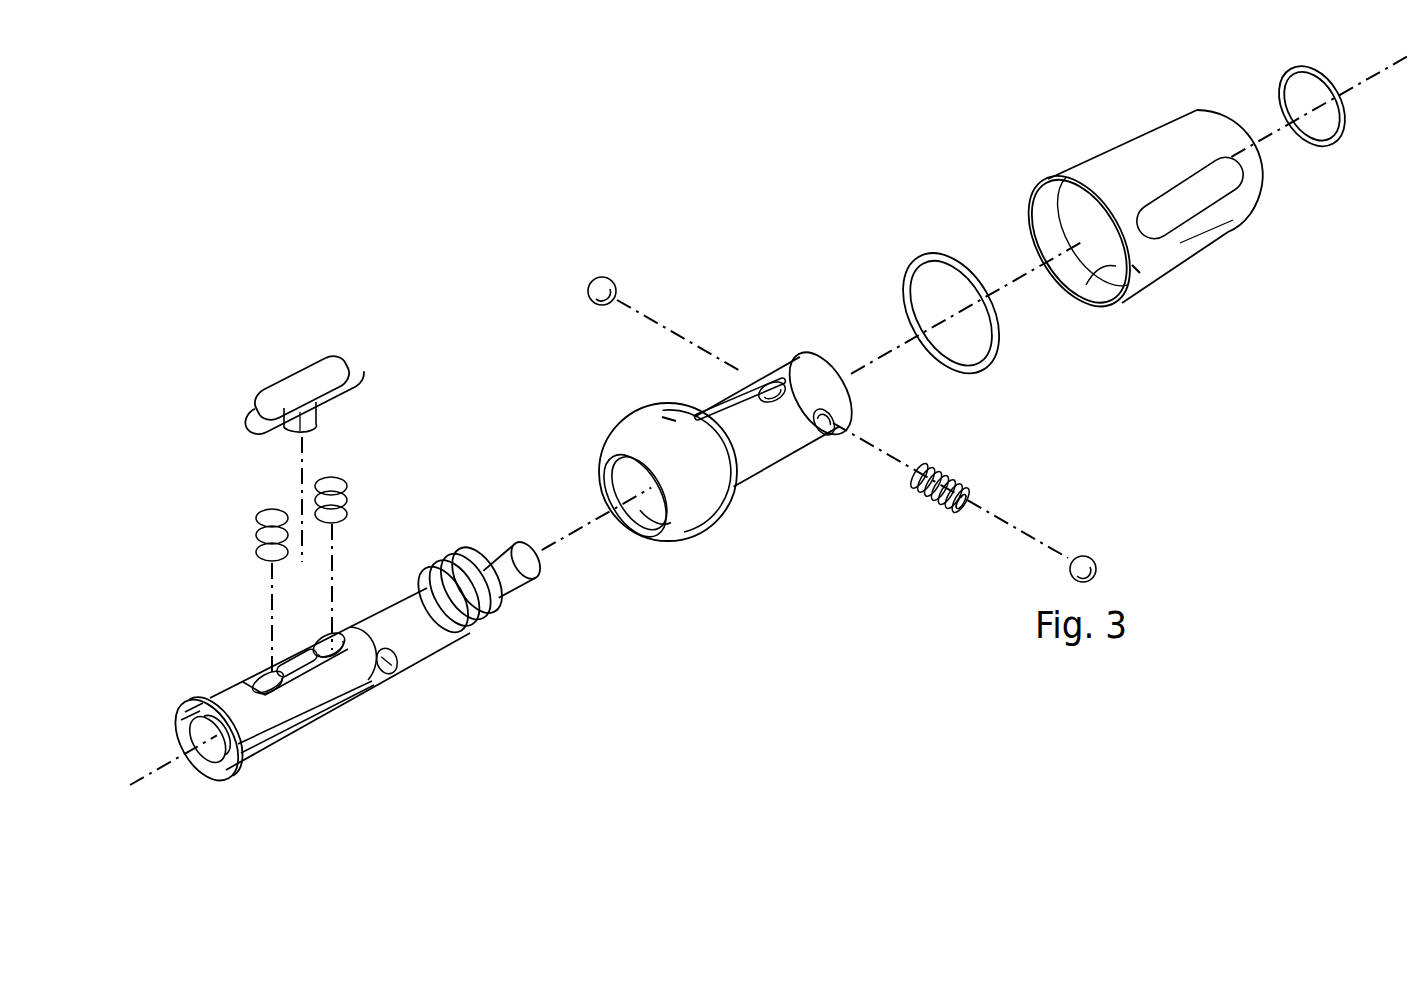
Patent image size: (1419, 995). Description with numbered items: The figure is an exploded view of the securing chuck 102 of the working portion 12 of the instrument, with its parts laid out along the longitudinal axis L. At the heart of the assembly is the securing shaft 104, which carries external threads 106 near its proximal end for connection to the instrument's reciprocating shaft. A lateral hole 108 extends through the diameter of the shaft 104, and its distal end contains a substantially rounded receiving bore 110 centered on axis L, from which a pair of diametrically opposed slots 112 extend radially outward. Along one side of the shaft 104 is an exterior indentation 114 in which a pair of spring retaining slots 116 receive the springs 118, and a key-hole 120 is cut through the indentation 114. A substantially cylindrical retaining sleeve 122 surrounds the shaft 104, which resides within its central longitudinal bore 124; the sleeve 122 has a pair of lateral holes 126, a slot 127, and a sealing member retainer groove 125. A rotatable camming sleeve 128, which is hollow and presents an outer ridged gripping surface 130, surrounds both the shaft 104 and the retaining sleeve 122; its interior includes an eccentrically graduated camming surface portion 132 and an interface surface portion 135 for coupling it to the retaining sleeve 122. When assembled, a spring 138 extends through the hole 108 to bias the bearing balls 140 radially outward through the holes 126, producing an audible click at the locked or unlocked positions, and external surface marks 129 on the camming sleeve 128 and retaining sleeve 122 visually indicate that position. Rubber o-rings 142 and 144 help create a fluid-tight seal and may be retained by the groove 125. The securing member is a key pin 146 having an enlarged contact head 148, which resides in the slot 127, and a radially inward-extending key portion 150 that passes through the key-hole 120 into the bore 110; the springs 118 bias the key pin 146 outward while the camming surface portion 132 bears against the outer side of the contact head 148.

The working portion 12 is at (459, 237).
The securing chuck 102 is at (518, 377).
The securing shaft 104 is at (433, 663).
The external threads 106 is at (485, 622).
The lateral hole 108 is at (391, 682).
The receiving bore 110 is at (206, 768).
The slots 112 is at (183, 717).
The exterior indentation 114 is at (372, 640).
The spring retaining slots 116 is at (262, 674).
The springs 118 is at (260, 513).
The key-hole 120 is at (303, 650).
The retaining sleeve 122 is at (890, 433).
The central longitudinal bore 124 is at (646, 525).
The sealing member retainer groove 125 is at (740, 492).
The lateral holes 126 is at (775, 384).
The slot 127 is at (724, 416).
The camming sleeve 128 is at (1111, 229).
The external surface marks 129 is at (667, 422).
The gripping surface 130 is at (1180, 190).
The interior camming surface portion 132 is at (1100, 270).
The interface surface portion 135 is at (1036, 218).
The spring 138 is at (942, 470).
The bearing balls 140 is at (609, 279).
The rubber o-ring 142 is at (1330, 150).
The rubber o-ring 144 is at (912, 262).
The key pin 146 is at (314, 373).
The contact head 148 is at (336, 361).
The key portion 150 is at (322, 408).
The longitudinal axis L is at (173, 758).